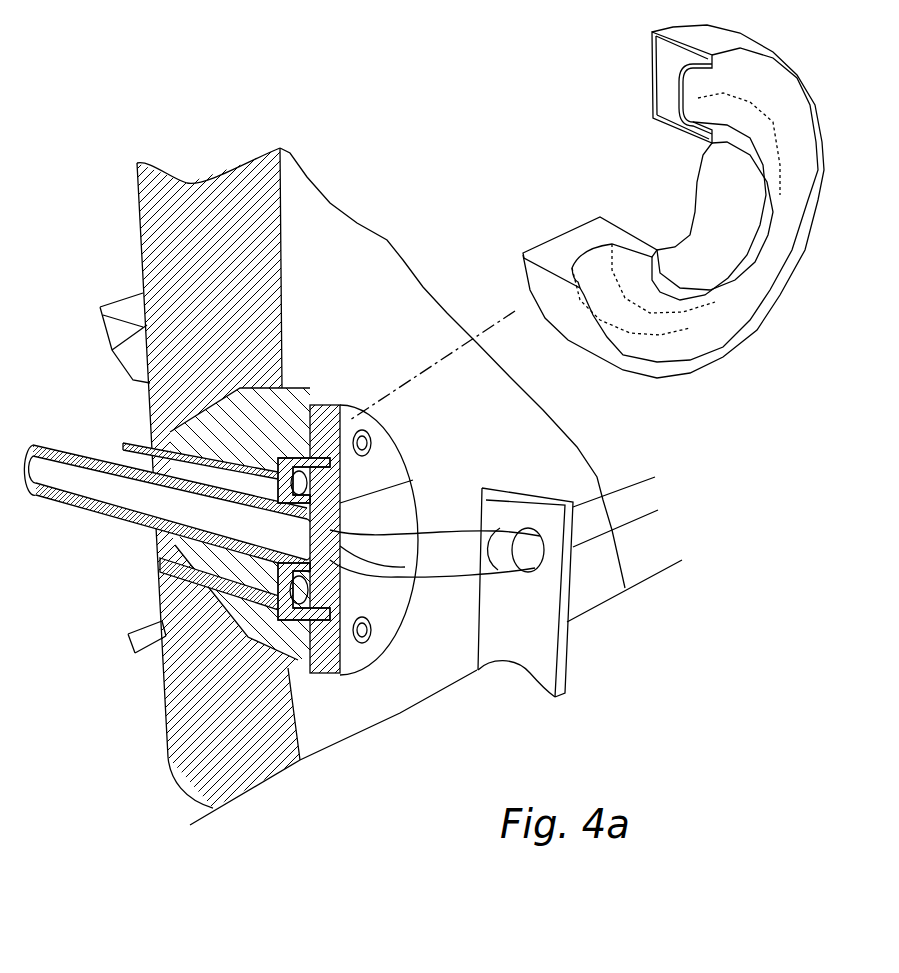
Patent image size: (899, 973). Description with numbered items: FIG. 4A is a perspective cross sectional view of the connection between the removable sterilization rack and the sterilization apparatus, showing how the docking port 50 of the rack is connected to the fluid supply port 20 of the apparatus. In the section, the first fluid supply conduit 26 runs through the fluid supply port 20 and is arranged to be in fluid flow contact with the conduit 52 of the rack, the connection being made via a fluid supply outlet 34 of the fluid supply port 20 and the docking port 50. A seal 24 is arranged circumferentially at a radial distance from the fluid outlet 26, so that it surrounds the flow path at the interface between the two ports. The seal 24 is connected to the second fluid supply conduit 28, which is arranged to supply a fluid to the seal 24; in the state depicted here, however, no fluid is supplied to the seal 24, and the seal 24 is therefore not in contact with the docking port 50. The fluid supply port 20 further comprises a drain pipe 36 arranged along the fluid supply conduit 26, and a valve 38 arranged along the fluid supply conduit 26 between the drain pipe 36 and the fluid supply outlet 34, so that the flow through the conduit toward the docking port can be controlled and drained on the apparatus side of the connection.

The fluid supply port 20 is at (243, 633).
The seal 24 is at (287, 457).
The first fluid supply conduit 26 is at (215, 512).
The second fluid supply conduit 28 is at (140, 443).
The fluid supply outlet 34 is at (352, 652).
The drain pipe 36 is at (125, 652).
The valve 38 is at (120, 317).
The docking port 50 is at (380, 517).
The conduit 52 is at (438, 567).